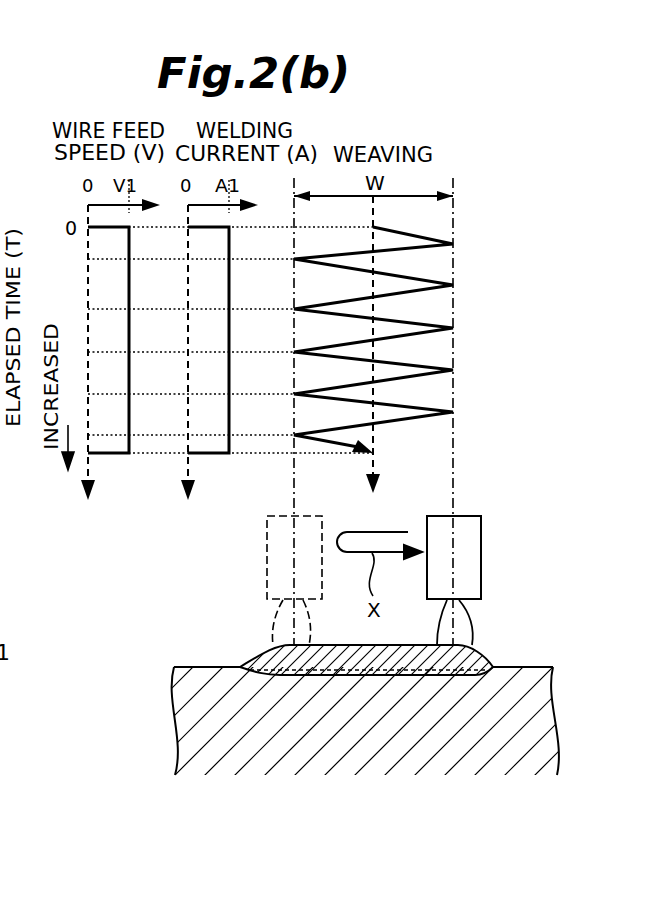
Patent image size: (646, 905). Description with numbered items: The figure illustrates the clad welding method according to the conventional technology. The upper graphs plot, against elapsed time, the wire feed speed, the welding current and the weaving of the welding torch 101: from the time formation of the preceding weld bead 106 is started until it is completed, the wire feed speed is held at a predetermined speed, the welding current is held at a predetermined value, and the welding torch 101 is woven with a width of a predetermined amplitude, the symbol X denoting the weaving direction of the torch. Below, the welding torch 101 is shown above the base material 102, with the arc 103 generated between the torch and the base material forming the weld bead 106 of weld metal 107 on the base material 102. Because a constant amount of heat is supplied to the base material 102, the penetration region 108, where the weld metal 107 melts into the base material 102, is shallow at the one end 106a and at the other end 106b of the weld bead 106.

The welding torch 101 is at (465, 548).
The base material 102 is at (535, 720).
The arc 103 is at (450, 623).
The weld bead 106 is at (374, 733).
The one end 106a is at (240, 667).
The other end 106b is at (488, 668).
The weld metal 107 is at (465, 666).
The penetration region 108 is at (425, 673).